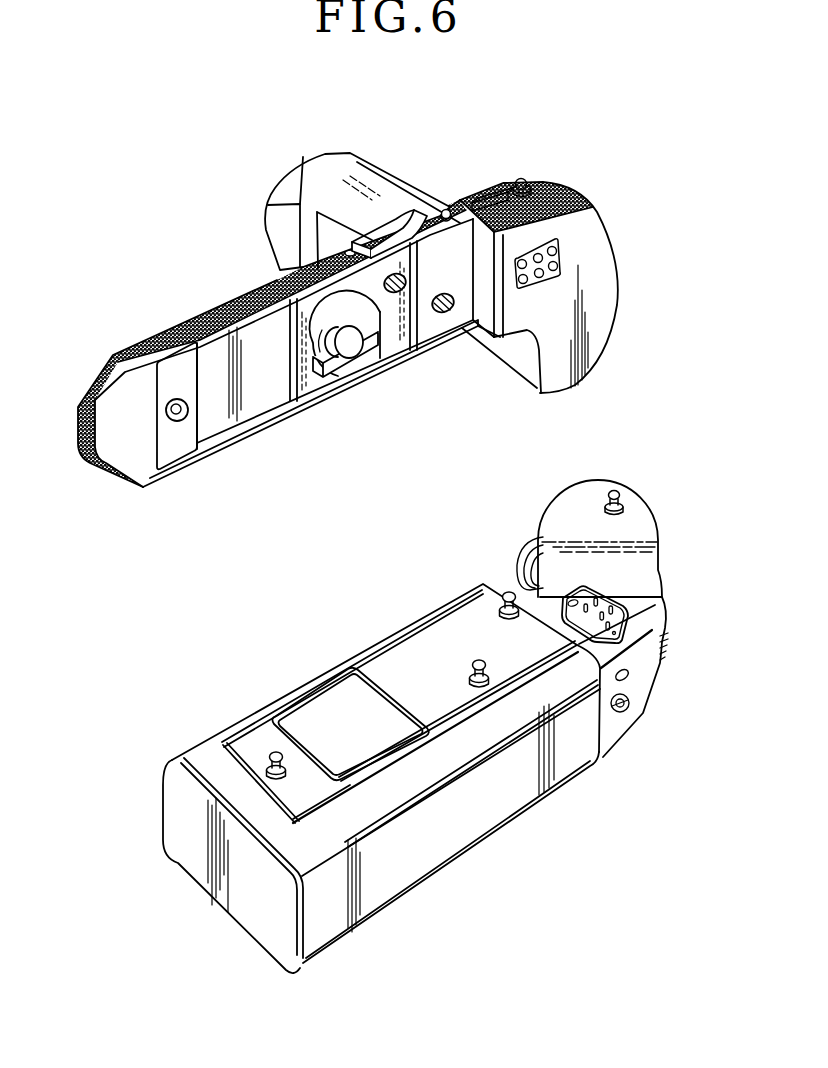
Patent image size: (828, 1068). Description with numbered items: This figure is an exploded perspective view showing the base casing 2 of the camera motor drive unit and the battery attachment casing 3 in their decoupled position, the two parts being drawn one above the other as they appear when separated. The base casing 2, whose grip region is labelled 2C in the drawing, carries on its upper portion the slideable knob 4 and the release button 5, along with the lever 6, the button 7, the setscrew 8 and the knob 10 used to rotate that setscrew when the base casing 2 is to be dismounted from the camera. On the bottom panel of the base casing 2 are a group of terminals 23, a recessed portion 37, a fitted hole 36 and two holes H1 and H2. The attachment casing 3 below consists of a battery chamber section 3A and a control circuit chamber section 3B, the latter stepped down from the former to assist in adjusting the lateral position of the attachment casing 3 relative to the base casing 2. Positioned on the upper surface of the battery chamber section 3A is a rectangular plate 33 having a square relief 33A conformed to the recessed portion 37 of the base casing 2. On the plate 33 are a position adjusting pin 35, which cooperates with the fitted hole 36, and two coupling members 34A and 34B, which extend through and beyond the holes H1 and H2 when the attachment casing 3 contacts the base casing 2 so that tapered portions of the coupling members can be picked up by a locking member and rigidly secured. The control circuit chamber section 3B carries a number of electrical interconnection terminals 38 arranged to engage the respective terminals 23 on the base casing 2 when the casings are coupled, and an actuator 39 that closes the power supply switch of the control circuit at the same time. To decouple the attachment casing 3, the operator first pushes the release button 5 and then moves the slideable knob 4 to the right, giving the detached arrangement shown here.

The base casing 2 is at (582, 184).
The grip portion of camera body 2C is at (487, 315).
The slideable knob 4 is at (388, 238).
The release button 5 is at (445, 207).
The lever 6 is at (496, 194).
The button 7 is at (522, 179).
The setscrew 8 is at (348, 347).
The knob 10 is at (320, 363).
The terminals 23 is at (560, 258).
The fitted hole 36 is at (179, 421).
The recessed portion 37 is at (250, 398).
The hole H1 is at (396, 295).
The hole H2 is at (440, 322).
The attachment casing 3 is at (512, 831).
The battery chamber section 3A is at (397, 878).
The control circuit chamber section 3B is at (645, 632).
The rectangular plate 33 is at (470, 632).
The window opening 33A is at (320, 712).
The coupling member 34A is at (472, 663).
The coupling member 34B is at (506, 596).
The position adjusting pin 35 is at (272, 755).
The electrical interconnection terminals 38 is at (615, 610).
The actuator 39 is at (616, 492).